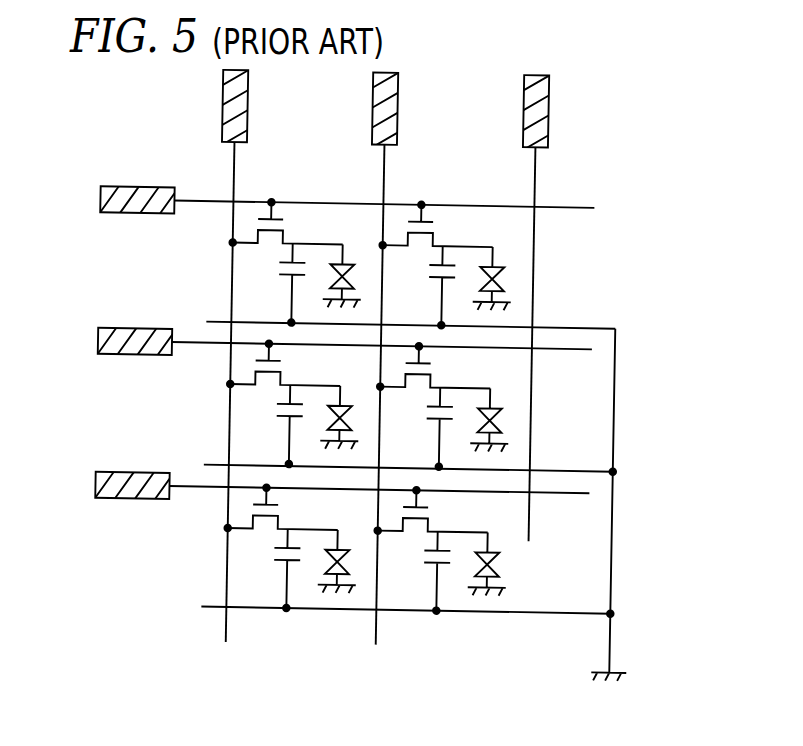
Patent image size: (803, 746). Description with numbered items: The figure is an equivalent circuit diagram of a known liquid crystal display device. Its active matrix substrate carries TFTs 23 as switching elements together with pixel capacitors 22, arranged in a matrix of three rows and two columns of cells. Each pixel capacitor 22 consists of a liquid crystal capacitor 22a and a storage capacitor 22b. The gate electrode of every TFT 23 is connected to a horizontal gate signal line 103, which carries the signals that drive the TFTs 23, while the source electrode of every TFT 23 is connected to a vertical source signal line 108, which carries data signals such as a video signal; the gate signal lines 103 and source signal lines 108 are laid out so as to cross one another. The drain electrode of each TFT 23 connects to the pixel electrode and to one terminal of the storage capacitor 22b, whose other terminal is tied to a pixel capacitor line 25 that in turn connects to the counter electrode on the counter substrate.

The gate signal line 103 is at (578, 204).
The source signal line 108 is at (379, 170).
The TFT 23 is at (436, 201).
The pixel capacitor line 25 is at (597, 325).
The pixel capacitor 22 is at (532, 632).
The liquid crystal capacitor 22a is at (500, 618).
The storage capacitor 22b is at (422, 630).